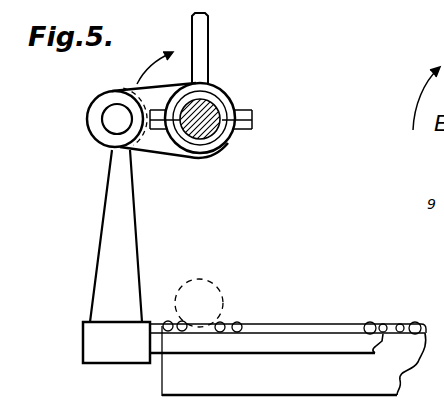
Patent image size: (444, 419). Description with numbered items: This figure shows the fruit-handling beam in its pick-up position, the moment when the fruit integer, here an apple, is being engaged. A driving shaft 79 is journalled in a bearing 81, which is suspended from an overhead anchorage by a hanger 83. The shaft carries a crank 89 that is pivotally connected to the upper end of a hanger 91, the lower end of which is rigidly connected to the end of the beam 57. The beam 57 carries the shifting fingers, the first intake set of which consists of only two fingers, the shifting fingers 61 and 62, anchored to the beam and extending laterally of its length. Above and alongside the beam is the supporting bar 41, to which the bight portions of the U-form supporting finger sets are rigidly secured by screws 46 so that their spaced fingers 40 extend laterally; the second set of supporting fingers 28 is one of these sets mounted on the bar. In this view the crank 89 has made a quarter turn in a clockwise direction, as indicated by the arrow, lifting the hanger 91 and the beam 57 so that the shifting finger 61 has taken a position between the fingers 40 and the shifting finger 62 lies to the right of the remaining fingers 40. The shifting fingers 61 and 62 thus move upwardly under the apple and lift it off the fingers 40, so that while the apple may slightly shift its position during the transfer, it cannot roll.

The crank 89 is at (136, 86).
The driving shaft 79 is at (208, 118).
The bearing 81 is at (216, 100).
The hanger 83 is at (209, 37).
The hanger 91 is at (125, 240).
The supporting bar 41 is at (177, 377).
The beam 57 is at (298, 340).
The spaced fingers 40 is at (166, 321).
The shifting finger 61 is at (185, 322).
The shifting finger 62 is at (240, 323).
The screws 46 is at (383, 324).
The set of supporting fingers 28 is at (389, 324).